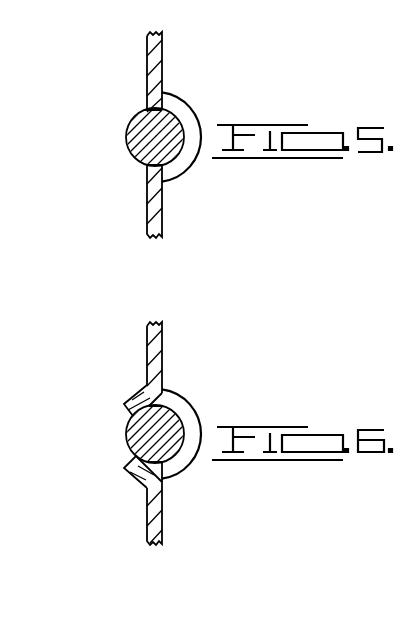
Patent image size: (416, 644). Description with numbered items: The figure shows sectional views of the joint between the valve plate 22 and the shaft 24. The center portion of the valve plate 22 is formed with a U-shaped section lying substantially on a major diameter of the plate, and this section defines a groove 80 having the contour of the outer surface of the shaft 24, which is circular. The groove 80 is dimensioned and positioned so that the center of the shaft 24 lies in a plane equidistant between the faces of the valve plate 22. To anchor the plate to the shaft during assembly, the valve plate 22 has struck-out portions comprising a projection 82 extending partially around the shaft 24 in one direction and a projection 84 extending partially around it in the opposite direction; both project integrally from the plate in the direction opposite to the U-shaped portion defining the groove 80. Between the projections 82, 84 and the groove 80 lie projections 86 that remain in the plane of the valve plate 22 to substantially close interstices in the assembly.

In FIG. 5, the valve plate 22 is at (147, 222).
In FIG. 6, the valve plate 22 is at (147, 517).
In FIG. 5, the shaft 24 is at (136, 140).
In FIG. 6, the shaft 24 is at (136, 432).
In FIG. 5, the groove 80 is at (174, 127).
In FIG. 6, the groove 80 is at (176, 452).
In FIG. 6, the projection 82 is at (126, 470).
In FIG. 6, the projection 84 is at (130, 396).
In FIG. 5, the projections 86 is at (147, 110).
In FIG. 6, the projections 86 is at (157, 401).